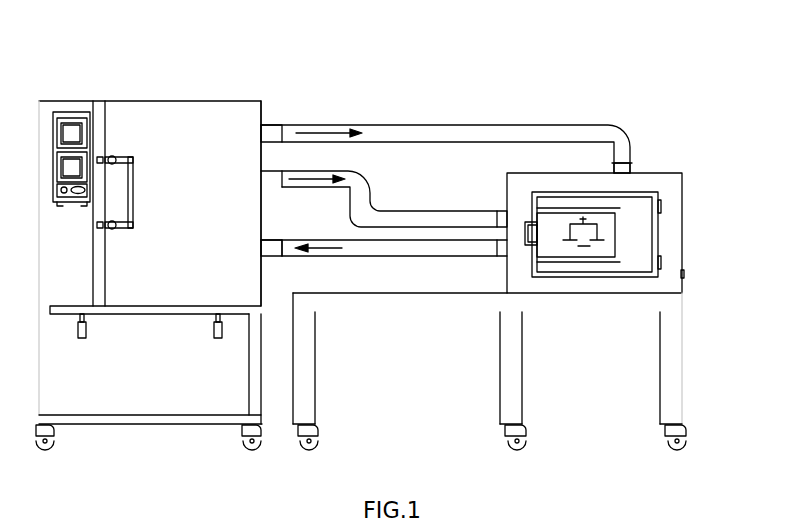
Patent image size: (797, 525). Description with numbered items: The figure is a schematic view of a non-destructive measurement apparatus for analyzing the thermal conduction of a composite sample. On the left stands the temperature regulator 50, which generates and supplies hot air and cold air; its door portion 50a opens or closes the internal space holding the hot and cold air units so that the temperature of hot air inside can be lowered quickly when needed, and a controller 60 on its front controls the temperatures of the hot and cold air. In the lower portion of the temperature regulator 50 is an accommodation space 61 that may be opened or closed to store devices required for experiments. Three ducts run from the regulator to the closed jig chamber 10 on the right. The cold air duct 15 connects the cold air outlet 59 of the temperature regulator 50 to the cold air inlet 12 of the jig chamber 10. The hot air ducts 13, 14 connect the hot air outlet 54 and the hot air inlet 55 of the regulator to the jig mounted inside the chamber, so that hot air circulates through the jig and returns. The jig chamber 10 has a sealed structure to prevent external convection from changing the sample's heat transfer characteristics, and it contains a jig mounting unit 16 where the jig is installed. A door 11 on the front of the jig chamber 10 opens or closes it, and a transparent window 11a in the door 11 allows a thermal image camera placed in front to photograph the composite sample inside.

The jig chamber 10 is at (658, 161).
The door 11 is at (662, 233).
The transparent window 11a is at (643, 212).
The cold air inlet 12 is at (615, 165).
The hot air duct 13 is at (410, 218).
The hot air duct 14 is at (457, 245).
The cold air duct 15 is at (423, 125).
The jig mounting unit 16 is at (640, 263).
The temperature regulator 50 is at (164, 89).
The door portion 50a is at (238, 111).
The hot air outlet 54 is at (278, 187).
The hot air inlet 55 is at (273, 252).
The cold air outlet 59 is at (268, 122).
The controller 60 is at (69, 112).
The accommodation space 61 is at (157, 395).